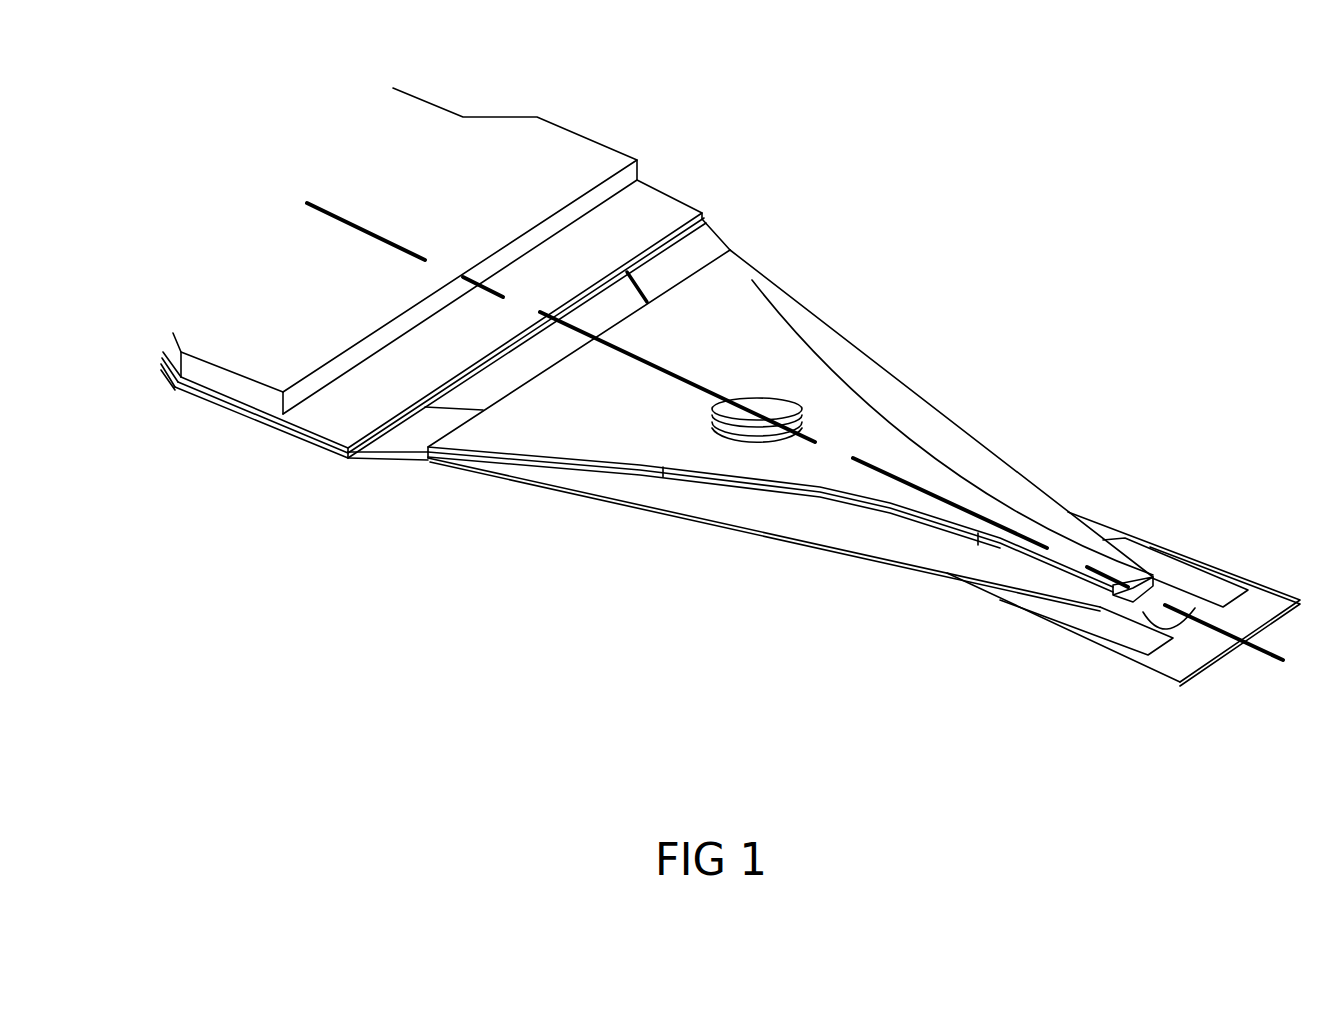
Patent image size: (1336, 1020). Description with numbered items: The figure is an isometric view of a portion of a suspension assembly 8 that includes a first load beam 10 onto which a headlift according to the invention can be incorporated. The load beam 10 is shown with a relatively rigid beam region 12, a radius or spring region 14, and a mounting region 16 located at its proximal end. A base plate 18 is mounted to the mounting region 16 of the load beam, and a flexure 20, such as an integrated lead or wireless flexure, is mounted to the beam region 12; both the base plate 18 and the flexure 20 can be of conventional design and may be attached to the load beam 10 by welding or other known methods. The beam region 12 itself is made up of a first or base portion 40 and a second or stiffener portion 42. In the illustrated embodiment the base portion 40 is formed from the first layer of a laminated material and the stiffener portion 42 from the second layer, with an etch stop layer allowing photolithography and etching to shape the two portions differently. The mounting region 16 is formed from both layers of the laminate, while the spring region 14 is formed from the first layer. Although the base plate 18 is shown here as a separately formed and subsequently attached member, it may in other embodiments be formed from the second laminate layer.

The suspension assembly 8 is at (538, 528).
The first load beam 10 is at (707, 523).
The beam region 12 is at (1006, 483).
The spring region 14 is at (697, 240).
The mounting region 16 is at (317, 446).
The base plate 18 is at (475, 145).
The flexure 20 is at (1165, 548).
The base portion 40 is at (896, 391).
The stiffener portion 42 is at (877, 483).